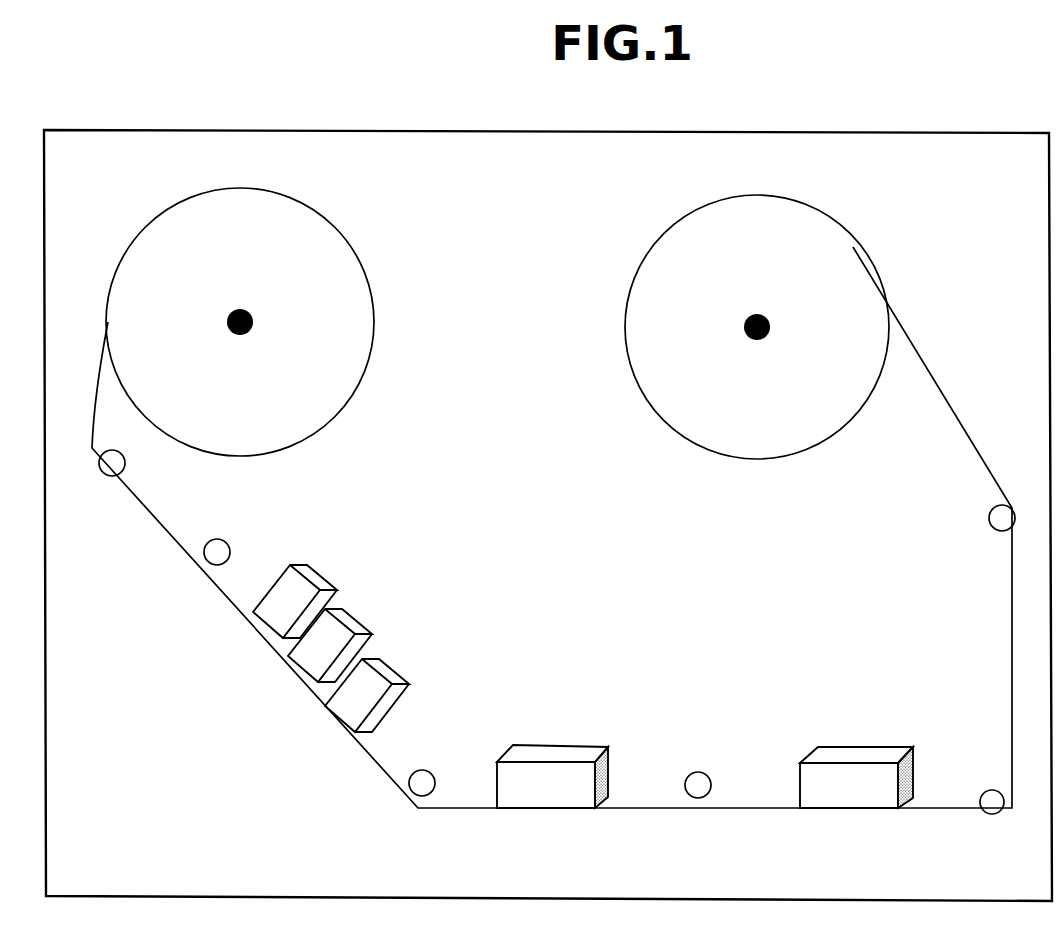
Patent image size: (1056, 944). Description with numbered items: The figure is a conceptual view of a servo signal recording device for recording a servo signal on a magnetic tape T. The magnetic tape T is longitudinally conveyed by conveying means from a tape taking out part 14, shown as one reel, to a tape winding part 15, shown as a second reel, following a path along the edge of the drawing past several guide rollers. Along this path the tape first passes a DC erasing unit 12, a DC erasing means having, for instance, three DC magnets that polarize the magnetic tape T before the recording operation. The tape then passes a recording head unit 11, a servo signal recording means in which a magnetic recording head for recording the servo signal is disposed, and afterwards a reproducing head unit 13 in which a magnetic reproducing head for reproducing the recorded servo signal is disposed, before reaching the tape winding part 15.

The recording head unit 11 is at (552, 743).
The DC erasing unit 12 is at (348, 574).
The reproducing head unit 13 is at (857, 747).
The tape taking out part 14 is at (352, 248).
The tape winding part 15 is at (833, 220).
The magnetic tape T is at (923, 358).